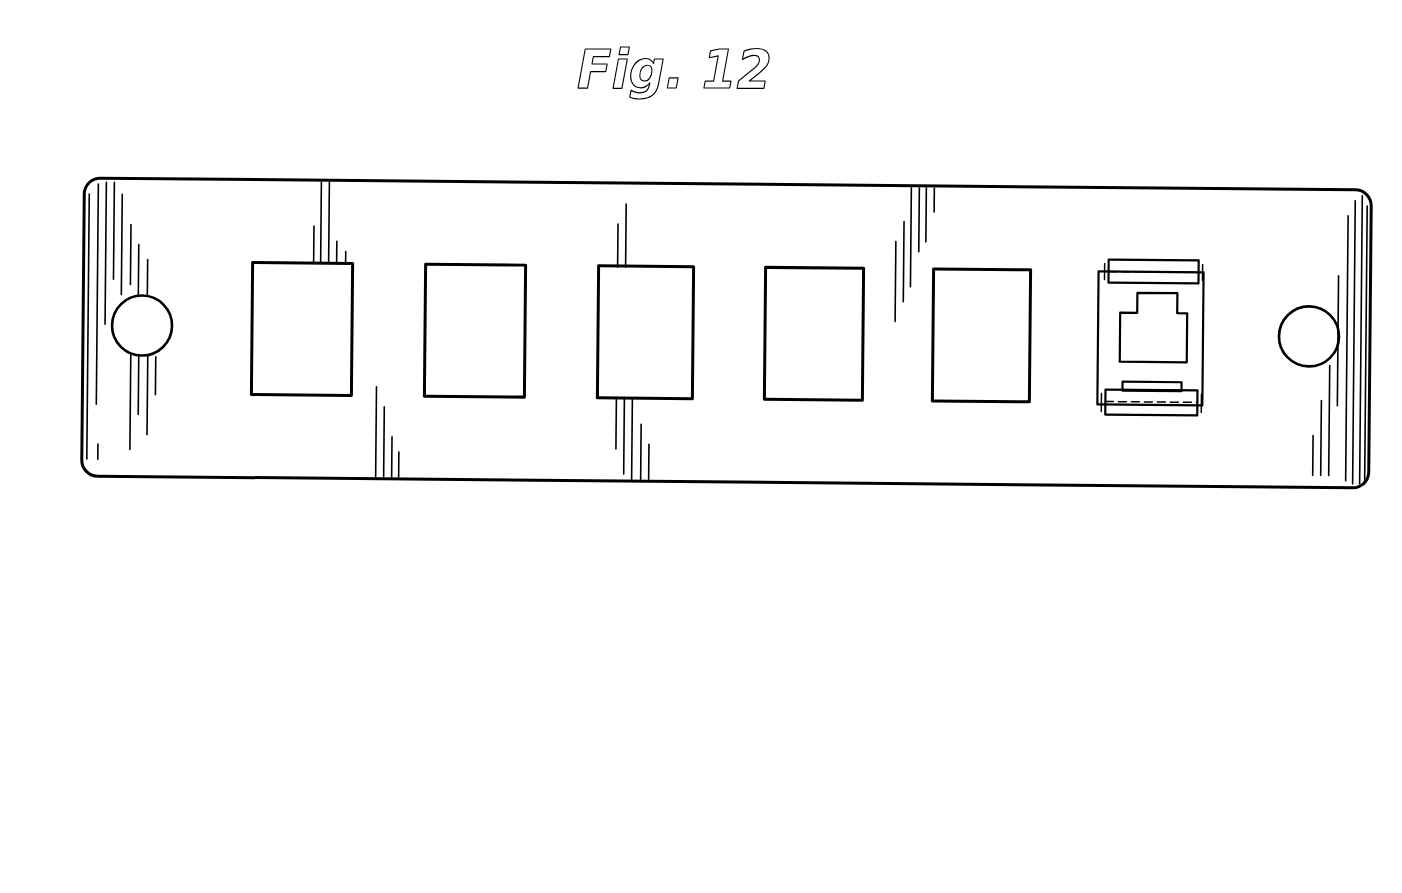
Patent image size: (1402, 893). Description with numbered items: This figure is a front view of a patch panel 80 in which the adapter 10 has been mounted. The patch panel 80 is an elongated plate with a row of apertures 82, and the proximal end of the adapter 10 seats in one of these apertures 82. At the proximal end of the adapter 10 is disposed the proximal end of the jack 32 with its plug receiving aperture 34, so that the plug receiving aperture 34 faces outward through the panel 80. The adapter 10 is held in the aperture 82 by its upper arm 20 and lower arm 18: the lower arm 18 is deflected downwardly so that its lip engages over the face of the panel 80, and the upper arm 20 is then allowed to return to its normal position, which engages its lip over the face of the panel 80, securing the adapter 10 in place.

The patch panel 80 is at (1247, 191).
The apertures 82 is at (1030, 300).
The adapter 10 is at (1124, 262).
The upper arm 20 is at (1172, 272).
The lower arm 18 is at (1160, 398).
The plug receiving aperture 34 is at (1180, 330).
The jack 32 is at (1193, 373).